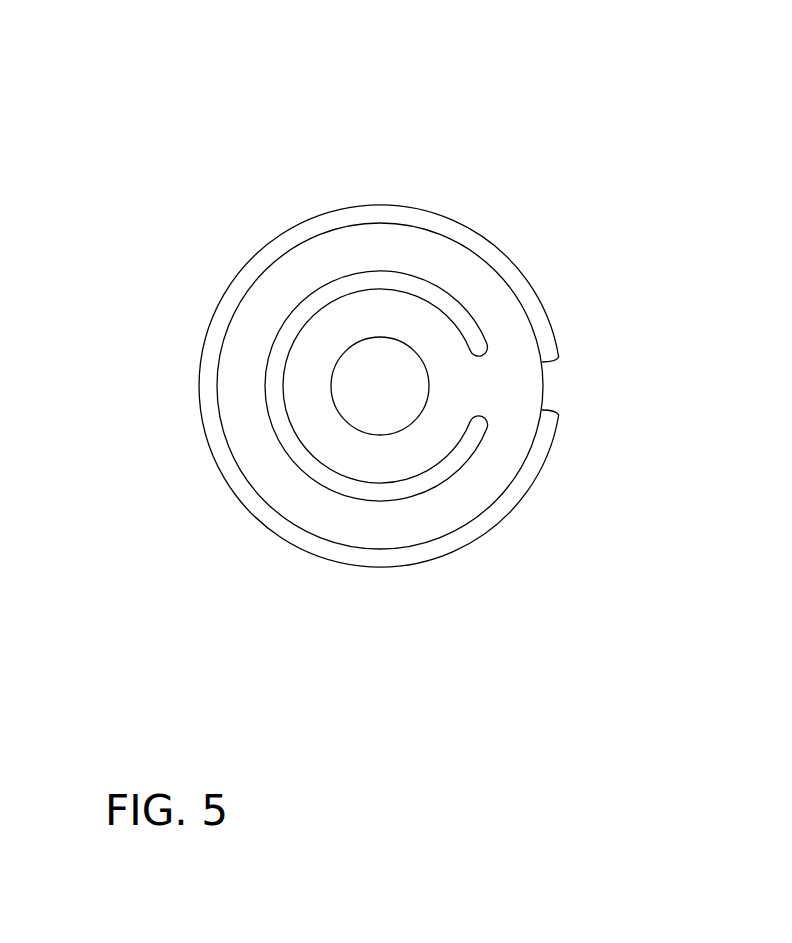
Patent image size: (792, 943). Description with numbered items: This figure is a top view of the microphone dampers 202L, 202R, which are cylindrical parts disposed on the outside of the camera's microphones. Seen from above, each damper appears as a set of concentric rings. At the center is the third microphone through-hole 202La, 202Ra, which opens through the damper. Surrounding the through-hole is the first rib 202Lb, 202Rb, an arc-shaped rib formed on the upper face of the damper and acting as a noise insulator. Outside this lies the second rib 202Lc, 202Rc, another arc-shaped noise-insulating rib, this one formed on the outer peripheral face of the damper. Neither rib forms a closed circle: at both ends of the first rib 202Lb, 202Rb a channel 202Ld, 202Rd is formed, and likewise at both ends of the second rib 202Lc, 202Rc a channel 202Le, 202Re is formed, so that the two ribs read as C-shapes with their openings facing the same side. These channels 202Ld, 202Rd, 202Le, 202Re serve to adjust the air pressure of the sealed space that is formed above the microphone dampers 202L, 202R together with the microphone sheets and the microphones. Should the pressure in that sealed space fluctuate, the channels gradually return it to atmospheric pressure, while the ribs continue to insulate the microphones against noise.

The microphone damper 202L is at (444, 378).
The microphone damper 202R is at (395, 151).
The third microphone through-hole 202La is at (482, 284).
The third microphone through-hole 202Ra is at (397, 345).
The first rib 202Lb is at (326, 308).
The first rib 202Rb is at (275, 378).
The second rib 202Lc is at (379, 462).
The second rib 202Rc is at (372, 567).
The channel 202Ld is at (600, 469).
The channel 202Rd is at (483, 420).
The channel 202Le is at (632, 313).
The channel 202Re is at (545, 363).